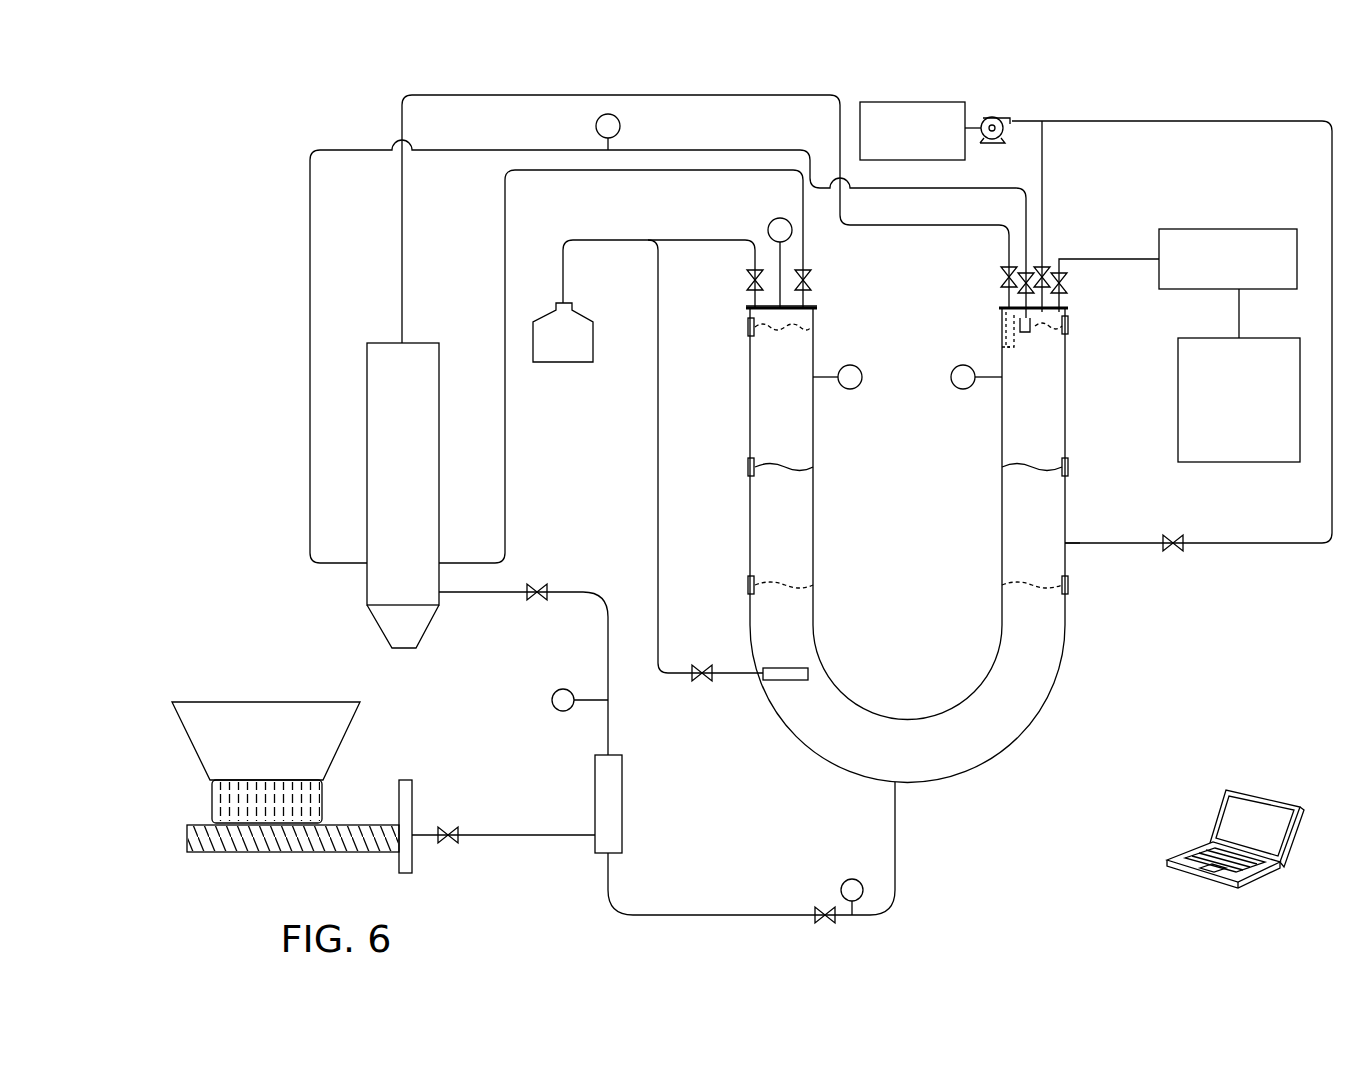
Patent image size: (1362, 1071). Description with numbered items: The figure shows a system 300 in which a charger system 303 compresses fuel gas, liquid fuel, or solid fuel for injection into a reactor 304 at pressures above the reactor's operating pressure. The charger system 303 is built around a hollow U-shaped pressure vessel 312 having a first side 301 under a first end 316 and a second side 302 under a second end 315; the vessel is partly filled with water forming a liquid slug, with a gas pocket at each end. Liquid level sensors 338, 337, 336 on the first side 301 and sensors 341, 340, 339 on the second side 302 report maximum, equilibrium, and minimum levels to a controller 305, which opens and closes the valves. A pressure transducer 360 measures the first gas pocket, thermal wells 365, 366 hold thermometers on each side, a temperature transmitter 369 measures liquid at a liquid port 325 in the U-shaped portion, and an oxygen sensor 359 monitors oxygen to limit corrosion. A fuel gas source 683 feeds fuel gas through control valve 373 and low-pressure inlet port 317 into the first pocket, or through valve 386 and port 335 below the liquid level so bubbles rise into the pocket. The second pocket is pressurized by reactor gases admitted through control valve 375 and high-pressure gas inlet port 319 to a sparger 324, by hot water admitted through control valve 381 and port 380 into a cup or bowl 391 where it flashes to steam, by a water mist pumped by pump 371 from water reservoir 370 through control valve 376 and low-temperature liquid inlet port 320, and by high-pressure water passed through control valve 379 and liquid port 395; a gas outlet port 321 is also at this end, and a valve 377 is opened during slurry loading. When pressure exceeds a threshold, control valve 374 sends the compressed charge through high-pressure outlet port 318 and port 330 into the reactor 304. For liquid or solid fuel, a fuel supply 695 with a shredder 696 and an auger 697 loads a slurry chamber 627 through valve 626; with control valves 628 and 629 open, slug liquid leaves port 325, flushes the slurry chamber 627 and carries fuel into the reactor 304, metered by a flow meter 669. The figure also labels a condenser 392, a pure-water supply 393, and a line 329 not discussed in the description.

The system 300 is at (1247, 680).
The first side of the vessel 301 is at (765, 484).
The second side of the vessel 302 is at (1022, 450).
The charger system 303 is at (949, 704).
The reactor 304 is at (367, 396).
The controller 305 is at (1213, 822).
The U-shaped pressure vessel 312 is at (1022, 735).
The second vessel end 315 is at (1055, 321).
The first vessel end 316 is at (800, 322).
The low-pressure inlet port 317 is at (748, 306).
The high-pressure outlet port 318 is at (815, 306).
The high-pressure gas inlet port 319 is at (1005, 311).
The low-temperature liquid inlet port 320 is at (1040, 302).
The gas outlet port 321 is at (1060, 310).
The sparger 324 is at (1003, 355).
The liquid port 325 is at (897, 785).
The SCWOR outlet line 329 is at (441, 594).
The reactor port 330 is at (441, 561).
The liquid port 335 is at (758, 668).
The liquid level sensor 336 is at (748, 581).
The liquid level sensor 337 is at (748, 463).
The liquid level sensor 338 is at (748, 330).
The liquid level sensor 339 is at (1068, 581).
The liquid level sensor 340 is at (1068, 463).
The liquid level sensor 341 is at (1068, 330).
The oxygen sensor 359 is at (606, 114).
The pressure transducer 360 is at (769, 226).
The thermal well 365 is at (852, 390).
The thermal well 366 is at (959, 390).
The temperature transmitter 369 is at (843, 880).
The water reservoir 370 is at (905, 162).
The pump 371 is at (1004, 140).
The control valve 373 is at (748, 283).
The control valve 374 is at (811, 283).
The control valve 375 is at (1000, 272).
The control valve 376 is at (1045, 270).
The valve 377 is at (1062, 272).
The control valve 379 is at (1175, 535).
The port 380 is at (1020, 302).
The control valve 381 is at (1024, 270).
The valve 386 is at (700, 690).
The cup or bowl 391 is at (1016, 385).
The condenser 392 is at (1197, 228).
The pure water tank 393 is at (1258, 338).
The liquid port 395 is at (1070, 540).
The valve 626 is at (446, 826).
The slurry chamber 627 is at (595, 770).
The control valve 628 is at (541, 582).
The control valve 629 is at (830, 924).
The flow meter 669 is at (553, 692).
The fuel gas source 683 is at (553, 364).
The fuel supply 695 is at (253, 701).
The shredder 696 is at (326, 808).
The auger 697 is at (283, 855).